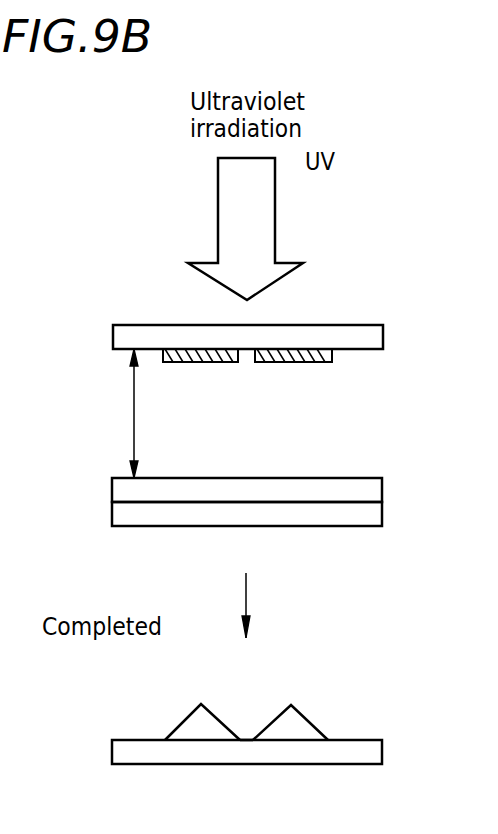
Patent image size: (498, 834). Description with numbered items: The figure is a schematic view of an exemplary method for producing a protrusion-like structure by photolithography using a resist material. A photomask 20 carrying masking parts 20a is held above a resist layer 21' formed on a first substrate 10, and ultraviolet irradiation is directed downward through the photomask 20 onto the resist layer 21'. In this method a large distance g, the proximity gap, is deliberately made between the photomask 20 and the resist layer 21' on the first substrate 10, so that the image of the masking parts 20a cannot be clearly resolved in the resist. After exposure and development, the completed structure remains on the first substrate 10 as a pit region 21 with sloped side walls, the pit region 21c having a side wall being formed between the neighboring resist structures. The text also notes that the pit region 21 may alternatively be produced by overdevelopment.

The photomask 20 is at (123, 330).
The masking parts 20a is at (177, 362).
The proximity gap g is at (133, 400).
The resist layer 21' is at (212, 497).
The first substrate 10 is at (116, 513).
The pit region 21 is at (220, 702).
The pit region 21c is at (241, 717).